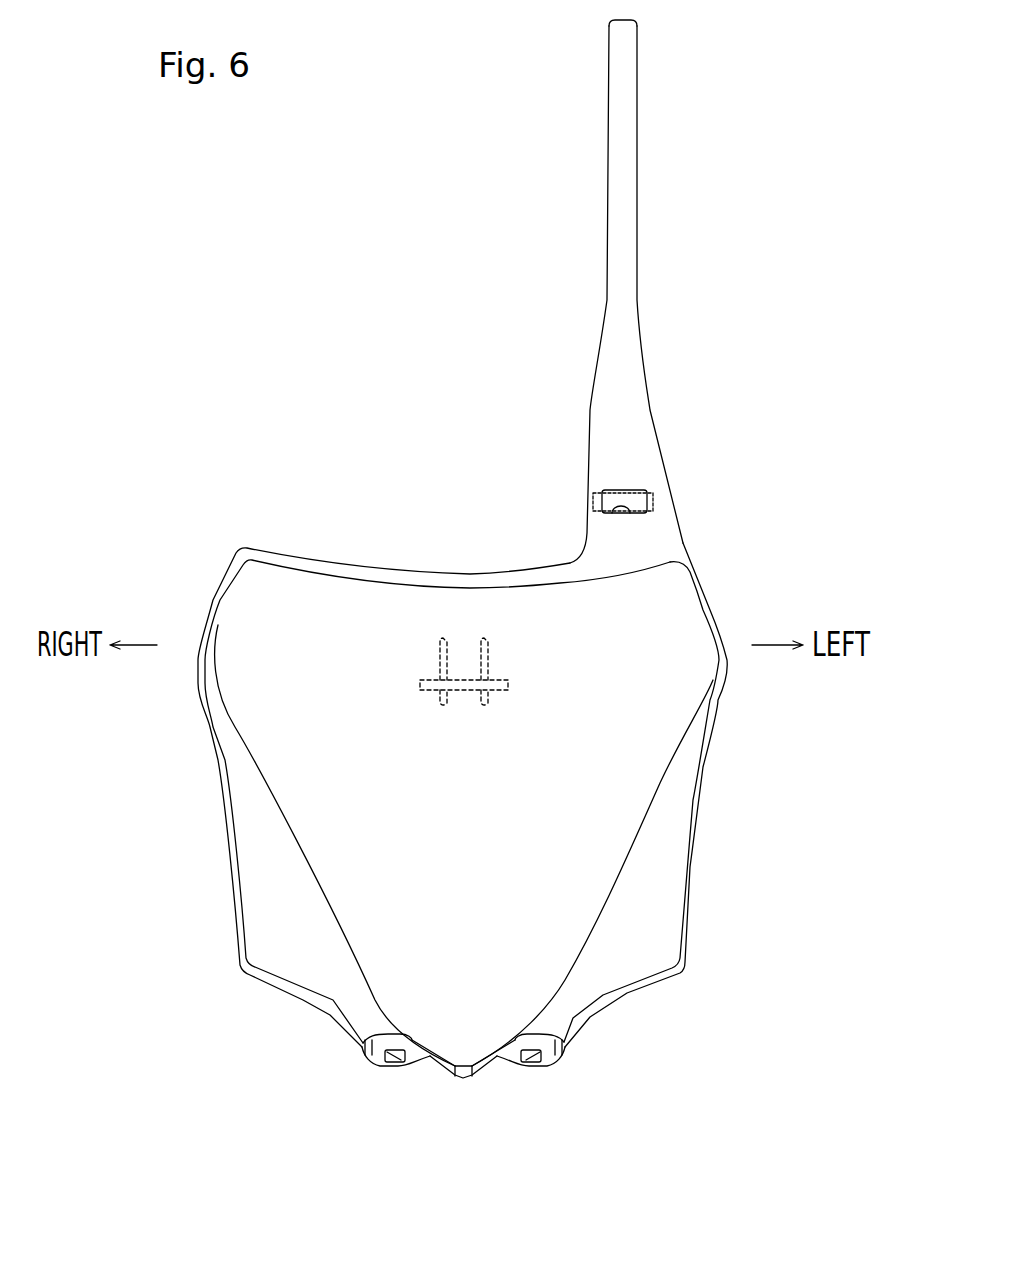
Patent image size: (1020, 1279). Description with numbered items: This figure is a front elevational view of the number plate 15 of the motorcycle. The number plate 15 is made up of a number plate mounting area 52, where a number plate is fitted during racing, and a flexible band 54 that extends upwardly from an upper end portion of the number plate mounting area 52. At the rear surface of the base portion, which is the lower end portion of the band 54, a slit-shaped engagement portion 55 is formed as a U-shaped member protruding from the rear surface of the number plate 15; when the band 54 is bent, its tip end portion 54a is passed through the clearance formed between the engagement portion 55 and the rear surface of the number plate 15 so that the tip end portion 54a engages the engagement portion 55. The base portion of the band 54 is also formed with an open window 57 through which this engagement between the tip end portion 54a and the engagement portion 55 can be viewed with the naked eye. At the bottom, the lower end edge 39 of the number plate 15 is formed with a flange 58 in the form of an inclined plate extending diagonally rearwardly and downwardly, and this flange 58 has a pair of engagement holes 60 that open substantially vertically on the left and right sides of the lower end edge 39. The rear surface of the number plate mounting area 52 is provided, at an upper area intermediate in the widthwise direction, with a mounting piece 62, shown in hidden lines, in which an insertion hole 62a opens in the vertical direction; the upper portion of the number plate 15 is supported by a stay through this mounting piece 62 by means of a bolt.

The number plate 15 is at (401, 540).
The lower end edge 39 is at (463, 1080).
The number plate mounting area 52 is at (435, 785).
The flexible band 54 is at (618, 357).
The tip end portion 54a is at (626, 31).
The engagement portion 55 is at (637, 497).
The open window 57 is at (621, 513).
The flange 58 is at (487, 1066).
The engagement holes 60 is at (387, 1066).
The mounting piece 62 is at (475, 612).
The insertion hole 62a is at (458, 677).